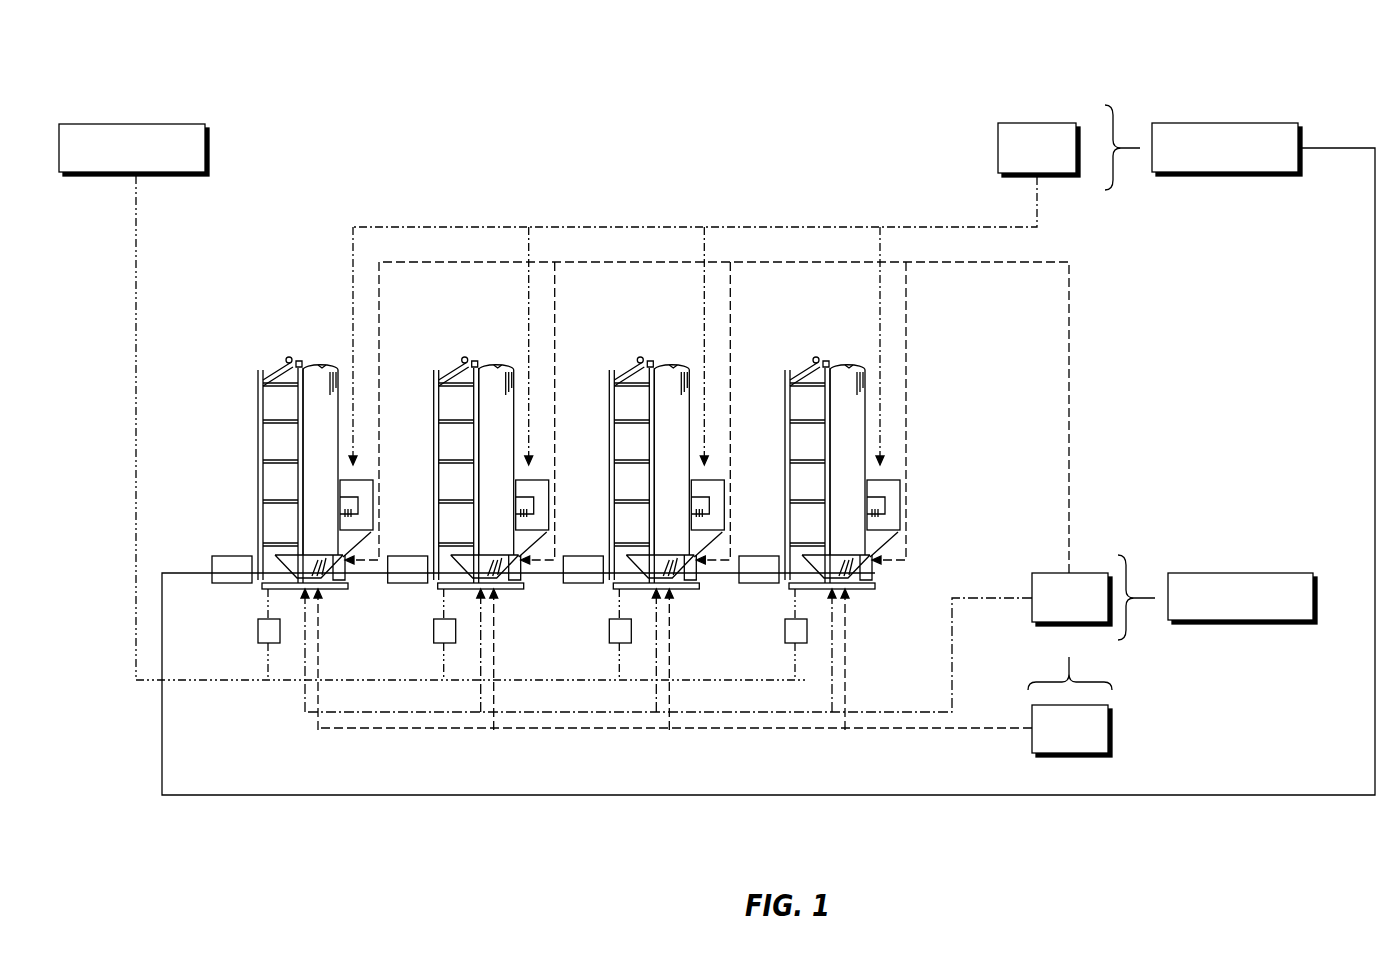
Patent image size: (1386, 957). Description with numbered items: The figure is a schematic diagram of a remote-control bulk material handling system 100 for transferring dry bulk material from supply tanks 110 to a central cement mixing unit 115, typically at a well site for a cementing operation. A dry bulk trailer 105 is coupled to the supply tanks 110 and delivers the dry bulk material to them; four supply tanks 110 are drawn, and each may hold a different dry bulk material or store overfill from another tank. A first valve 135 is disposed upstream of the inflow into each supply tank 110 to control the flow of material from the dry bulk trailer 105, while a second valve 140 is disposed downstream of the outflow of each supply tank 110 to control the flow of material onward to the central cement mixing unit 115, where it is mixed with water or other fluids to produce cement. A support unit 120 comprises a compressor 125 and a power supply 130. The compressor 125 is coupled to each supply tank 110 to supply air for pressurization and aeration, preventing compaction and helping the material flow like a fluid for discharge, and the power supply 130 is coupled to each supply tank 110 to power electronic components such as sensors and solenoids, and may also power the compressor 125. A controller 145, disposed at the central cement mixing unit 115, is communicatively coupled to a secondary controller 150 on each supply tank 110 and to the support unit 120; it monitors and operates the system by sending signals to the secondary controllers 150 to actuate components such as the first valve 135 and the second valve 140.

The remote-control bulk material handling system 100 is at (310, 40).
The dry bulk trailer 105 is at (134, 150).
The supply tank 110 is at (290, 361).
The central cement mixing unit 115 is at (1203, 147).
The support unit 120 is at (1217, 597).
The compressor 125 is at (1072, 599).
The power supply 130 is at (1070, 707).
The first valve 135 is at (265, 631).
The second valve 140 is at (232, 556).
The controller 145 is at (1039, 150).
The secondary controller 150 is at (360, 510).